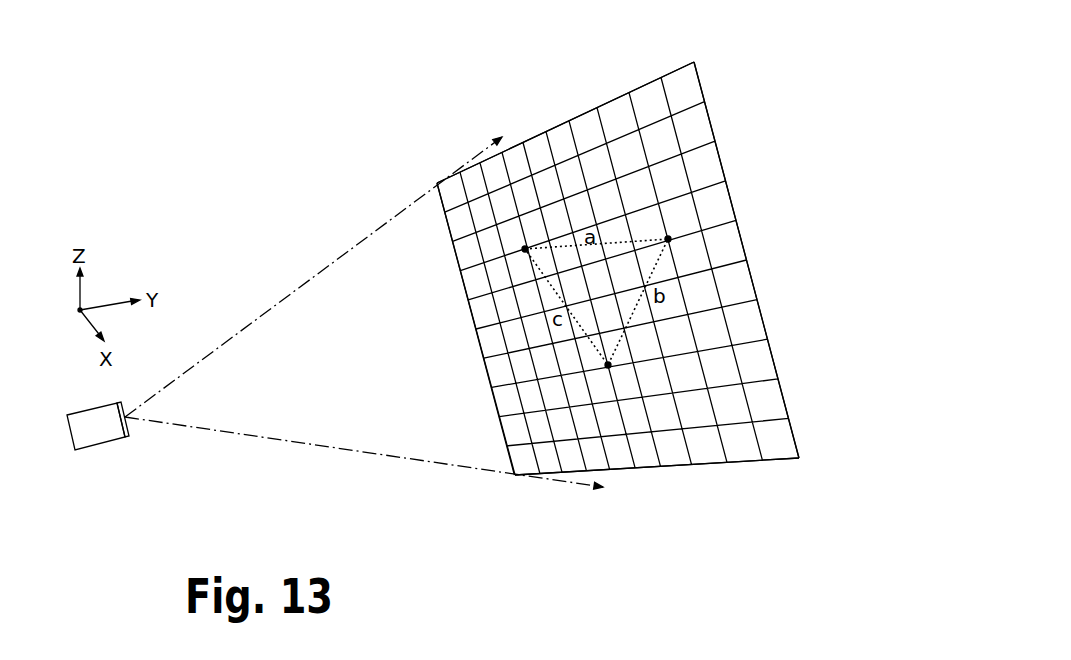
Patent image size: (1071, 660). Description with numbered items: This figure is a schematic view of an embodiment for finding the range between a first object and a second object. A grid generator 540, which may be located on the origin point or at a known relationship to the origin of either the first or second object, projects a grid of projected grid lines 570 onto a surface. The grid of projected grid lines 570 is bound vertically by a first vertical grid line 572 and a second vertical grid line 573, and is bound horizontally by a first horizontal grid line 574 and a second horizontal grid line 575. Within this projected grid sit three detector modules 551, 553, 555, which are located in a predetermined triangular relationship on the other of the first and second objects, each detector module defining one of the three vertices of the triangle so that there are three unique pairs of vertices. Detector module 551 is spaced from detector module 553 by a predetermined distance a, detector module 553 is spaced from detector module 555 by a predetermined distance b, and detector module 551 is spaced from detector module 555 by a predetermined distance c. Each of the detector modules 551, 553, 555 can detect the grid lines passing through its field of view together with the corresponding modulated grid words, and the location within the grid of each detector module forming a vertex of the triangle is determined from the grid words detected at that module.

The grid generator 540 is at (101, 450).
The detector module 551 is at (525, 249).
The detector module 553 is at (668, 239).
The detector module 555 is at (608, 365).
The projected grid lines 570 is at (733, 187).
The first vertical grid line 572 is at (503, 432).
The second vertical grid line 573 is at (716, 141).
The first horizontal grid line 574 is at (537, 135).
The second horizontal grid line 575 is at (715, 463).